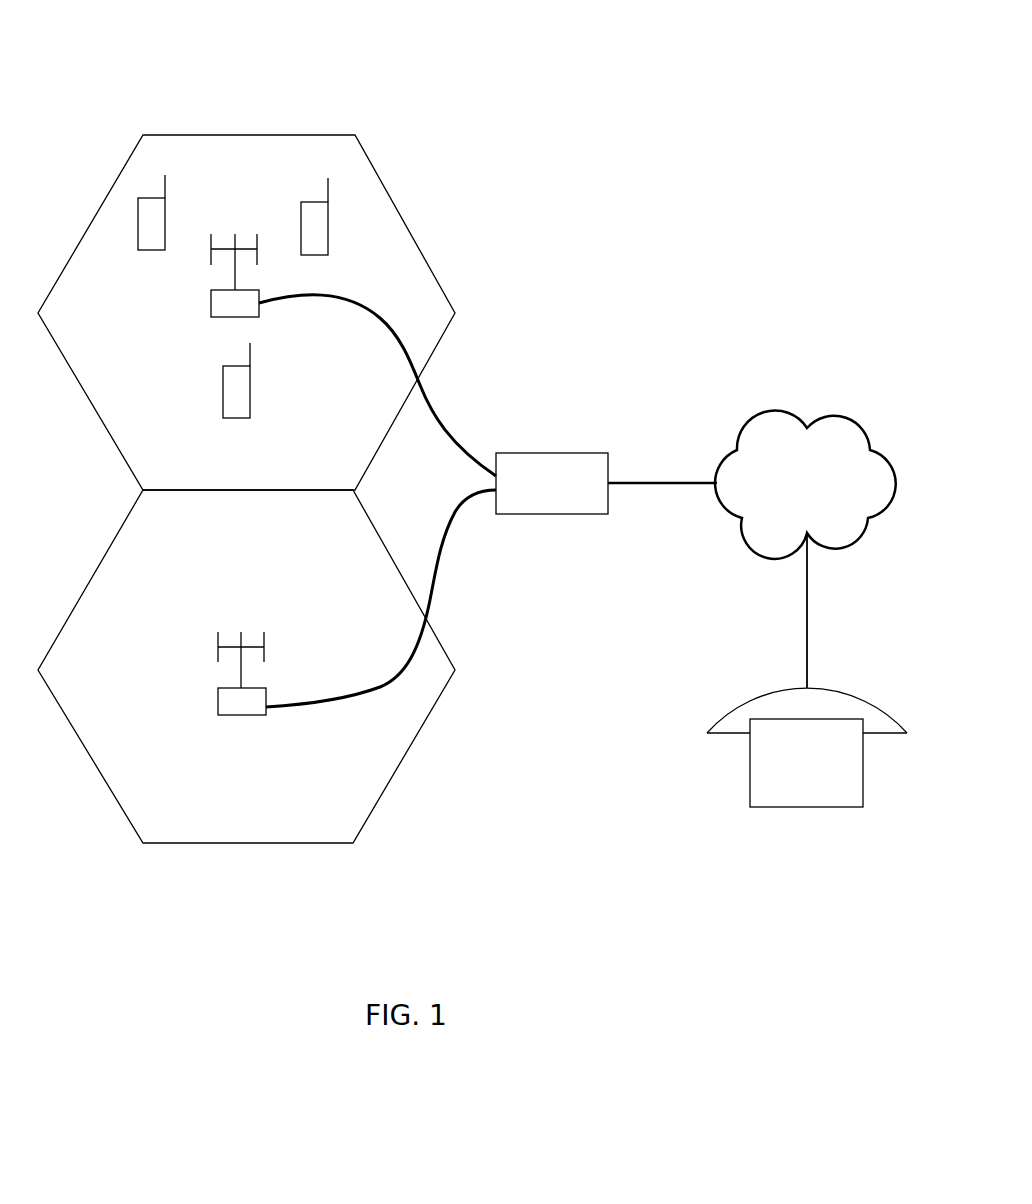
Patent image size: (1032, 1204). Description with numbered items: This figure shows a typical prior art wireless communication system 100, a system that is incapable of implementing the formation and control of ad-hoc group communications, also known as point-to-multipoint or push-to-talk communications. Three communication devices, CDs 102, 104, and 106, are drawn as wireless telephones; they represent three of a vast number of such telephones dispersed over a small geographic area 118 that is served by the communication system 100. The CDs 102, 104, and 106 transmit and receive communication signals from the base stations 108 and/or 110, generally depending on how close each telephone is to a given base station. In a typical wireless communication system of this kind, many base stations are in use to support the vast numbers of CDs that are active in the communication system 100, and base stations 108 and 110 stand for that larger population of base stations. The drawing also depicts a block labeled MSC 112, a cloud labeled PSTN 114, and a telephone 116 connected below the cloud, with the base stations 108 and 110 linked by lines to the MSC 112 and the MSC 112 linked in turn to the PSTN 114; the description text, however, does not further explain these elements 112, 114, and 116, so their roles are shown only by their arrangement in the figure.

The wireless communication system 100 is at (588, 112).
The CD 102 is at (165, 220).
The CD 104 is at (328, 228).
The CD 106 is at (250, 390).
The base station 108 is at (212, 302).
The base station 110 is at (243, 715).
The mobile switching center (MSC) 112 is at (552, 453).
The public switched telephone network (PSTN) 114 is at (807, 426).
The landline telephone 116 is at (807, 807).
The geographic area 118 is at (388, 195).